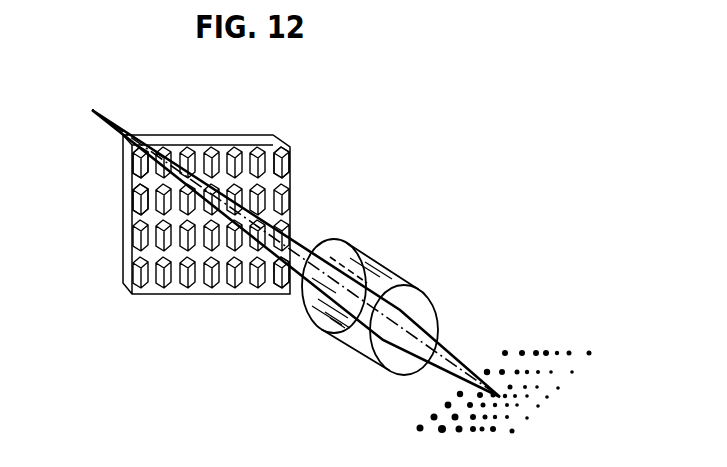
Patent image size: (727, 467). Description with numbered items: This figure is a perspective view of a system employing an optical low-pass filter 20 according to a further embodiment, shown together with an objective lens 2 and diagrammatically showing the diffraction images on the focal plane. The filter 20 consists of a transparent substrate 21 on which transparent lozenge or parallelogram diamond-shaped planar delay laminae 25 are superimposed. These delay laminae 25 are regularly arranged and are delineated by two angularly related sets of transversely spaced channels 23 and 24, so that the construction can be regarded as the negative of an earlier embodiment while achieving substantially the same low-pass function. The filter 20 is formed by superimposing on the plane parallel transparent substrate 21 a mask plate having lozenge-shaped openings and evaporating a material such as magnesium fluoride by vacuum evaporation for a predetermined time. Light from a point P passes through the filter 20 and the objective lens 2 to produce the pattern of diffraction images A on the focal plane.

The filter 20 is at (310, 156).
The transparent substrate 21 is at (213, 143).
The channels 23 is at (196, 297).
The channels 24 is at (133, 177).
The delay laminae 25 is at (268, 143).
The objective lens 2 is at (377, 264).
The object point P is at (280, 243).
The image point distribution A is at (504, 372).